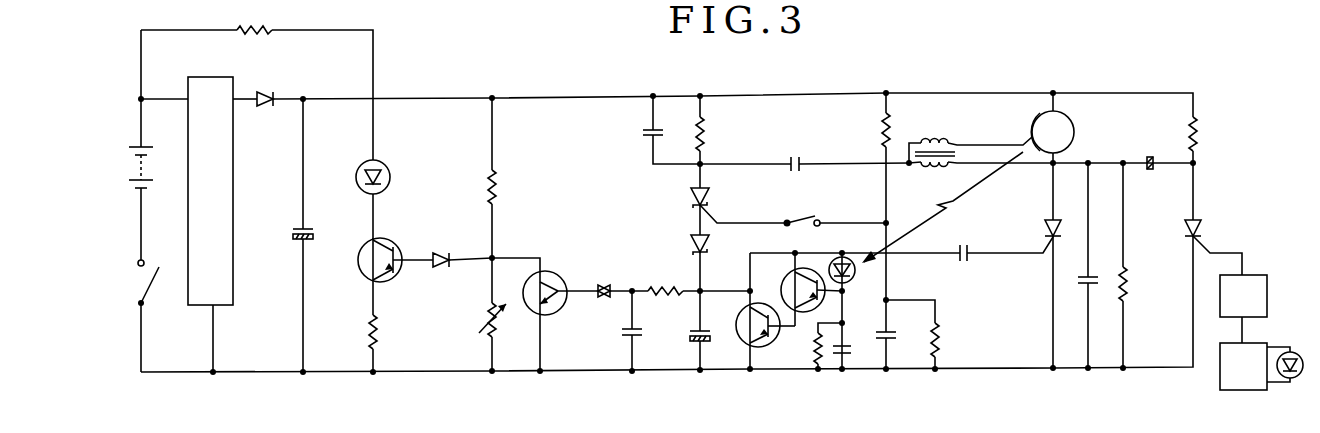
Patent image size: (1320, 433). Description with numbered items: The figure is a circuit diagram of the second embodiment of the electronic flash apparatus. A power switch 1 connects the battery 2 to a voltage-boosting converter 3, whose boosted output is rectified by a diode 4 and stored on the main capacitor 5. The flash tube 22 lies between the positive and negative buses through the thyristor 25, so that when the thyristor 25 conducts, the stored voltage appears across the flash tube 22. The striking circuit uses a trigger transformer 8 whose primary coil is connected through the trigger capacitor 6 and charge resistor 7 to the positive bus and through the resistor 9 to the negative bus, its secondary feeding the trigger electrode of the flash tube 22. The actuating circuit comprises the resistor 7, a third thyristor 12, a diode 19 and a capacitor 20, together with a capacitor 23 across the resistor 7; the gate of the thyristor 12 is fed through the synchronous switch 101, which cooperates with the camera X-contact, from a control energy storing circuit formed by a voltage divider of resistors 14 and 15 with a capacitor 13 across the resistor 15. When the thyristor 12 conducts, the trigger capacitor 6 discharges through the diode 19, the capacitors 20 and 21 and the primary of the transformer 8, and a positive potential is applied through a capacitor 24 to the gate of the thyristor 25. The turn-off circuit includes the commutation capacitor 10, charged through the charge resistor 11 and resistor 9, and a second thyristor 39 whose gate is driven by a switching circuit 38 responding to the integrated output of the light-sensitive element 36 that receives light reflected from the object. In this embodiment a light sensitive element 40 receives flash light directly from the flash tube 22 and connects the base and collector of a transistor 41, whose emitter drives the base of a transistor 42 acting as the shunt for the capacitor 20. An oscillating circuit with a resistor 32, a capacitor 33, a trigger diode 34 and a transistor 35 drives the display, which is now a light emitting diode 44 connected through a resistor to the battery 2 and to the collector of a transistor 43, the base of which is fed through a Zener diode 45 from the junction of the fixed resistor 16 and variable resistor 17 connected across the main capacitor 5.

The power switch 1 is at (154, 283).
The battery 2 is at (147, 167).
The voltage-boosting converter 3 is at (210, 224).
The diode 4 is at (253, 86).
The main capacitor 5 is at (313, 235).
The trigger capacitor 6 is at (804, 151).
The charge resistor 7 is at (709, 142).
The trigger transformer 8 is at (981, 165).
The resistor 9 is at (1133, 265).
The commutation capacitor 10 is at (1151, 149).
The charge resistor 11 is at (1207, 168).
The third thyristor 12 is at (714, 210).
The capacitor 13 is at (896, 334).
The first resistor 14 is at (872, 212).
The second resistor 15 is at (927, 334).
The fixed resistor 16 is at (506, 187).
The variable resistor 17 is at (504, 337).
The diode 19 is at (715, 281).
The capacitor 20 is at (686, 347).
The capacitor 21 is at (1075, 265).
The flash tube 22 is at (1069, 128).
The capacitor 23 is at (658, 130).
The capacitor 24 is at (1002, 263).
The thyristor 25 is at (1040, 265).
The resistor 32 is at (699, 276).
The capacitor 33 is at (617, 331).
The trigger diode 34 is at (618, 276).
The transistor 35 is at (545, 308).
The light-sensitive element 36 is at (1290, 385).
The switching circuit 38 is at (1243, 296).
The second thyristor 39 is at (1226, 303).
The light sensitive element 40 is at (851, 280).
The transistor 41 is at (788, 284).
The transistor 42 is at (745, 321).
The transistor 43 is at (366, 276).
The light emitting diode 44 is at (388, 200).
The Zener diode 45 is at (442, 247).
The synchronous switch 101 is at (830, 214).